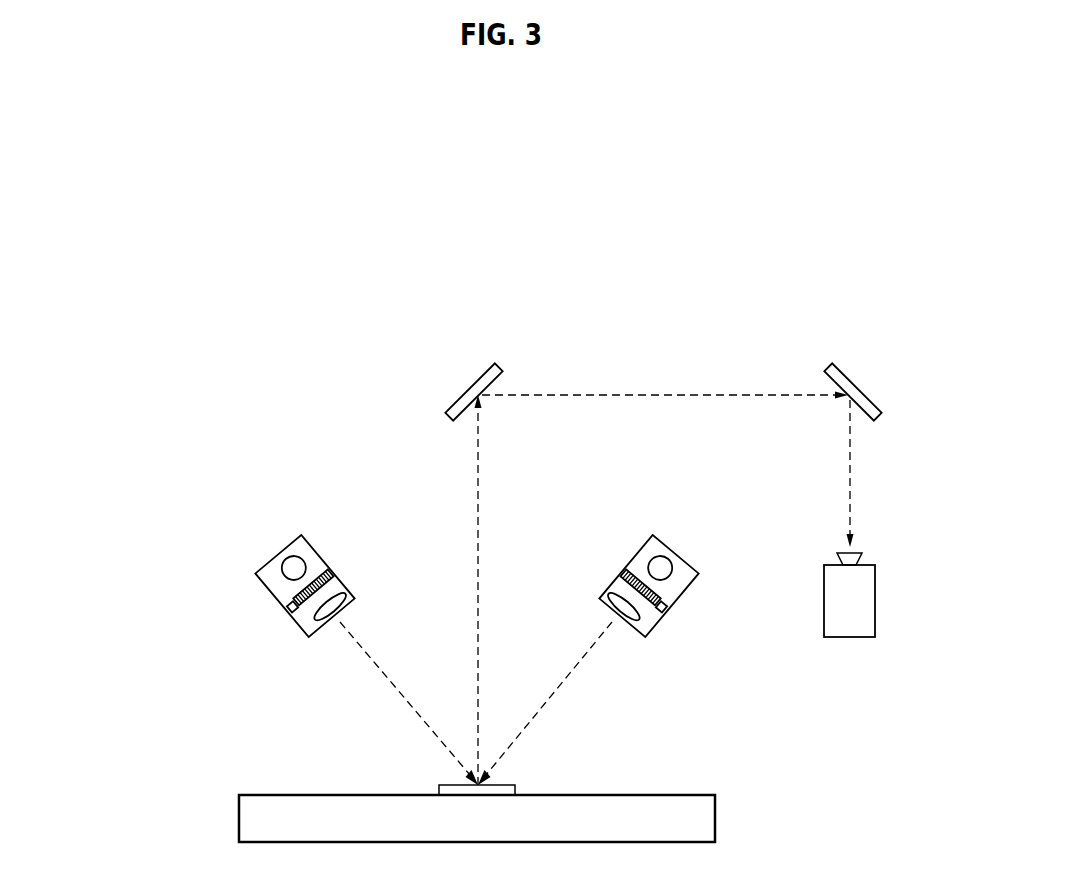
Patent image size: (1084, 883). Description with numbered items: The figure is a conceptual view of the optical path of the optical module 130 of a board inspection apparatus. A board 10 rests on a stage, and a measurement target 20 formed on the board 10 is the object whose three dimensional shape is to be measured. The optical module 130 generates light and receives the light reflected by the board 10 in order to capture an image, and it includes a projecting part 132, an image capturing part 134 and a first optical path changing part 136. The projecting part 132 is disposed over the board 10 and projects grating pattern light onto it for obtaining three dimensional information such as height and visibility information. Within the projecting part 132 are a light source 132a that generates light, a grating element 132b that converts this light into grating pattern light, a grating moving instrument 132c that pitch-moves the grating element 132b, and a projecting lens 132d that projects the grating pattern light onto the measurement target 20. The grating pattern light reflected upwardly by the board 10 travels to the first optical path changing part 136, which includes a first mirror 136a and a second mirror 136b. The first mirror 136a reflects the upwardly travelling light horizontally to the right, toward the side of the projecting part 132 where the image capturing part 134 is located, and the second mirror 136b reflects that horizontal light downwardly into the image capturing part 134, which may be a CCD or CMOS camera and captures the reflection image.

The board 10 is at (707, 818).
The measurement target 20 is at (514, 786).
The optical module 130 is at (413, 293).
The projecting part 132 is at (163, 545).
The light source 132a is at (283, 560).
The grating element 132b is at (298, 590).
The grating moving instrument 132c is at (296, 607).
The projecting lens 132d is at (313, 617).
The image capturing part 134 is at (828, 625).
The first optical path changing part 136 is at (813, 268).
The first mirror 136a is at (495, 364).
The second mirror 136b is at (831, 364).